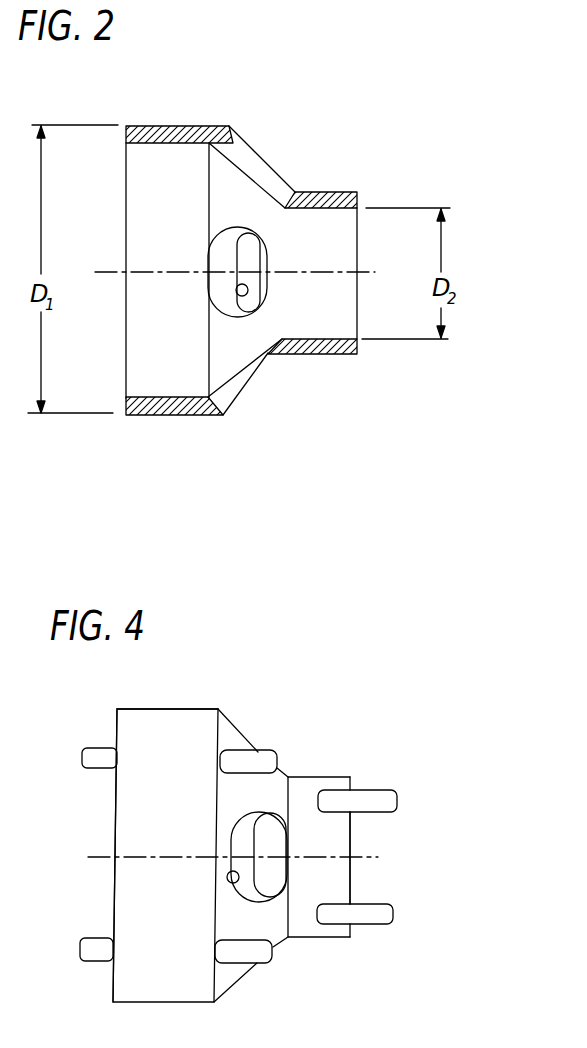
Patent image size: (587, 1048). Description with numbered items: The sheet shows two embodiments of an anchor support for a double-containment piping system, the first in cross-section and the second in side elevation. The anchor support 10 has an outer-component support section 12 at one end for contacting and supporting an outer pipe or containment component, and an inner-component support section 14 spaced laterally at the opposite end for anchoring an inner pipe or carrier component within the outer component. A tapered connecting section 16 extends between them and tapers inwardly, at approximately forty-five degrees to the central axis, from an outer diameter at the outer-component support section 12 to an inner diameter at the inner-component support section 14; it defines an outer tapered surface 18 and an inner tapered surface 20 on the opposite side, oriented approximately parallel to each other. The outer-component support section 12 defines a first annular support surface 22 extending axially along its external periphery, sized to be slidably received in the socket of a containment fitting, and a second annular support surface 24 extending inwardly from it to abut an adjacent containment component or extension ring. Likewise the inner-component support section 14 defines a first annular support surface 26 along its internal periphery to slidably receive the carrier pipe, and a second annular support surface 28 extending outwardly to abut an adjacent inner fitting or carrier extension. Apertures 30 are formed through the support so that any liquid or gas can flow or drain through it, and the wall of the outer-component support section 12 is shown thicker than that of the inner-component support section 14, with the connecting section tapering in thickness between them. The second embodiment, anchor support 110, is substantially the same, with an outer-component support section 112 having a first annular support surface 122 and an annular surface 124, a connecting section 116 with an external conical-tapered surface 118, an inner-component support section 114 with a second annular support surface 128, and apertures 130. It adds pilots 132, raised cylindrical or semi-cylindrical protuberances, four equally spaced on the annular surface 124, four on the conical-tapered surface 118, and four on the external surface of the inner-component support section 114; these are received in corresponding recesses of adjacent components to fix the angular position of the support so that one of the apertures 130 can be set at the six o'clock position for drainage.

In FIG. 2, the anchor support 10 is at (254, 266).
In FIG. 2, the outer-component support section 12 is at (162, 114).
In FIG. 2, the inner-component support section 14 is at (342, 369).
In FIG. 2, the tapered connecting section 16 is at (264, 401).
In FIG. 2, the outer tapered surface 18 is at (268, 166).
In FIG. 2, the inner tapered surface 20 is at (250, 180).
In FIG. 2, the first annular support surface 22 is at (150, 416).
In FIG. 2, the second annular support surface 24 is at (125, 135).
In FIG. 2, the first annular support surface 26 is at (330, 338).
In FIG. 2, the second annular support surface 28 is at (357, 338).
In FIG. 2, the apertures 30 is at (242, 296).
In FIG. 4, the anchor support 110 is at (235, 828).
In FIG. 4, the outer-component support section 112 is at (150, 696).
In FIG. 4, the inner-component support section 114 is at (322, 776).
In FIG. 4, the connecting section 116 is at (237, 727).
In FIG. 4, the external conical-tapered surface 118 is at (283, 770).
In FIG. 4, the first annular support surface 122 is at (140, 795).
In FIG. 4, the annular surface 124 is at (113, 893).
In FIG. 4, the second annular support surface 128 is at (352, 834).
In FIG. 4, the apertures 130 is at (235, 878).
In FIG. 4, the pilots 132 is at (88, 750).